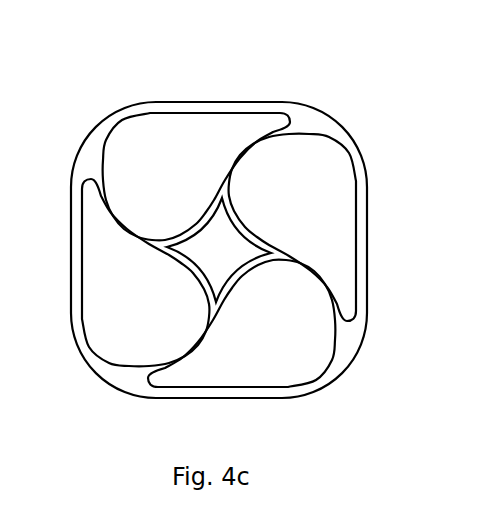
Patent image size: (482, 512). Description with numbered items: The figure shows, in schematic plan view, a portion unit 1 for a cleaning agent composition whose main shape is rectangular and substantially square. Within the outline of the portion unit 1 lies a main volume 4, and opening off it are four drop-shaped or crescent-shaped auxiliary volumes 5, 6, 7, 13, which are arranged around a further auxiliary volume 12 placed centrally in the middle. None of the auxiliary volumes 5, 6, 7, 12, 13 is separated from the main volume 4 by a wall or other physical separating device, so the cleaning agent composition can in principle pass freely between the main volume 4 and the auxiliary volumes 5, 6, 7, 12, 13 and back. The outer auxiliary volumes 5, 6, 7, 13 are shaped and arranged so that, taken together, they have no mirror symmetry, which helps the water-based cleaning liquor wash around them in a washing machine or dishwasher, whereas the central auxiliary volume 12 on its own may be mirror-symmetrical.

The portion unit 1 is at (376, 139).
The main volume 4 is at (312, 125).
The auxiliary volume 5 is at (168, 138).
The auxiliary volume 6 is at (327, 191).
The auxiliary volume 7 is at (250, 355).
The auxiliary volume 12 is at (243, 250).
The auxiliary volume 13 is at (122, 302).